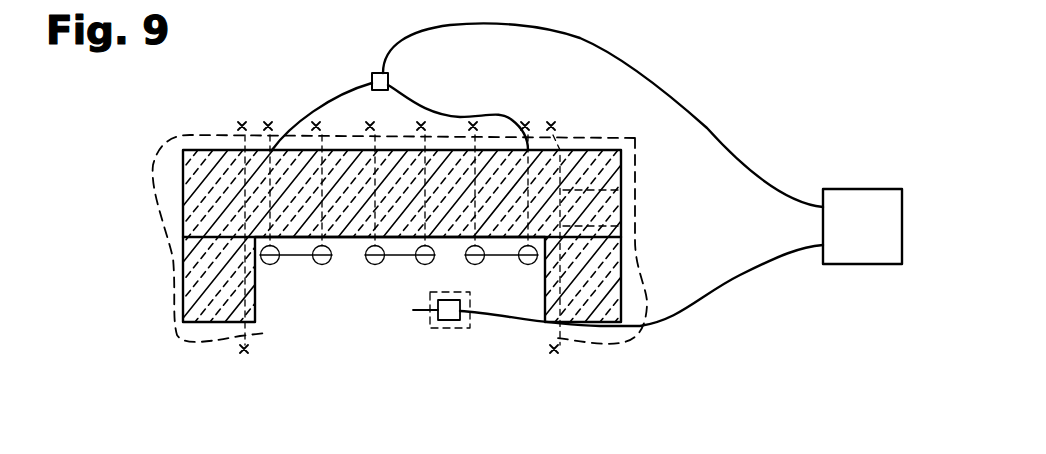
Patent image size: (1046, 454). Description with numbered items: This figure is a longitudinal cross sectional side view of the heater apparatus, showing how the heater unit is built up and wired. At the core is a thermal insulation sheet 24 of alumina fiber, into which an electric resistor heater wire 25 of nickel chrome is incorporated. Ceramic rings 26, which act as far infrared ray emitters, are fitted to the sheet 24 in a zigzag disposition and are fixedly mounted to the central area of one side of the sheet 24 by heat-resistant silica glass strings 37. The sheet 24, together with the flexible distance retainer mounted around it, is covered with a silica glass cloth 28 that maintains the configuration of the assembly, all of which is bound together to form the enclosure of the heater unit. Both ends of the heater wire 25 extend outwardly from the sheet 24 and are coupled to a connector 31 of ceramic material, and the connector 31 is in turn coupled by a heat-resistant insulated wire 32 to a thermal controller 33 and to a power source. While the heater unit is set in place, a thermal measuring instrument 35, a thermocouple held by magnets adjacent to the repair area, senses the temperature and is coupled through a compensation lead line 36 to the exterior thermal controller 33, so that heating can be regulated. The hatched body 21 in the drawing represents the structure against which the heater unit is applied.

The support body 21 is at (190, 282).
The thermal insulation sheet 24 is at (297, 175).
The heater wire 25 is at (290, 260).
The ceramic rings 26 is at (320, 264).
The silica glass cloth 28 is at (152, 183).
The connector 31 is at (375, 72).
The heat-resistant insulated wire 32 is at (620, 58).
The thermal controller 33 is at (865, 252).
The thermal measuring instrument 35 is at (448, 328).
The compensation lead line 36 is at (720, 280).
The silica glass strings 37 is at (620, 223).